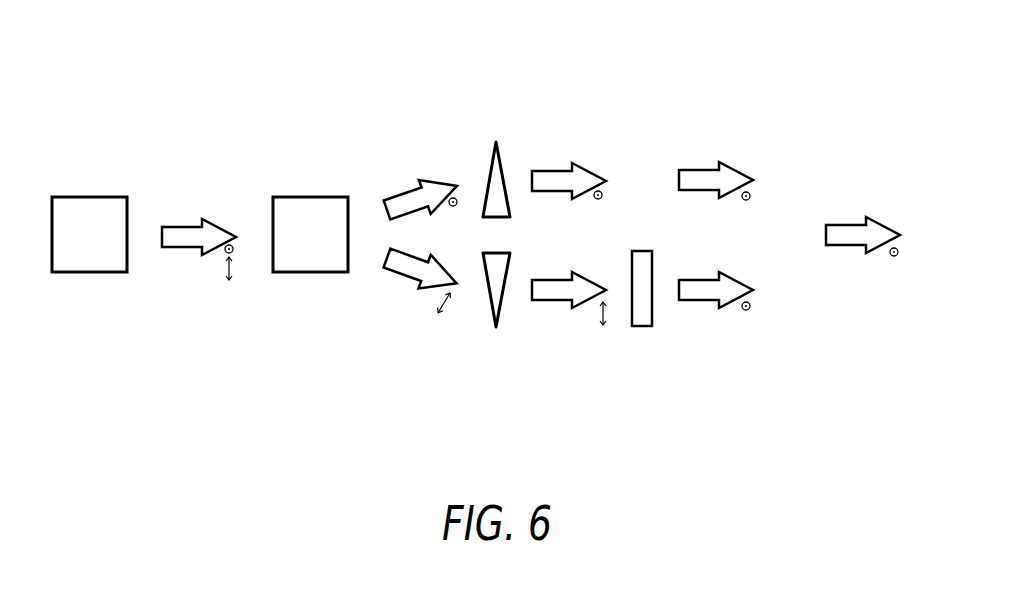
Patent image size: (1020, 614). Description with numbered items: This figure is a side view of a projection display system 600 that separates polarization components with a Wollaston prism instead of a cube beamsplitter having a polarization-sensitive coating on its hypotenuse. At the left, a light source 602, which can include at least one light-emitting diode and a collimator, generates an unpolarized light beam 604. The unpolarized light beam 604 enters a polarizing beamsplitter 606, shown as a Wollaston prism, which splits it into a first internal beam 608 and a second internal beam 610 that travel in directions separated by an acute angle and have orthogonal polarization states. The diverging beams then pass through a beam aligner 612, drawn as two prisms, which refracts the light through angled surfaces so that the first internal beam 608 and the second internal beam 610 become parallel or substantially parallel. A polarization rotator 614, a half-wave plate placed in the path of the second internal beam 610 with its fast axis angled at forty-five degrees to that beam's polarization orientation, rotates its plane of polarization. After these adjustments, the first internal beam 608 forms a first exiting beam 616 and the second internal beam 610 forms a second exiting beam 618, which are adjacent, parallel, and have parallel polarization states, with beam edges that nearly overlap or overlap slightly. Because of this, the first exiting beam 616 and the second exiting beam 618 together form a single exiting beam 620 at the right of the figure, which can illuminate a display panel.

The projection display system 600 is at (119, 78).
The light source 602 is at (90, 197).
The unpolarized light beam 604 is at (185, 222).
The polarizing beamsplitter 606 is at (310, 197).
The first internal beam 608 is at (403, 188).
The second internal beam 610 is at (403, 278).
The beam aligner 612 is at (497, 138).
The polarization rotator 614 is at (640, 328).
The first exiting beam 616 is at (699, 170).
The second exiting beam 618 is at (700, 302).
The single exiting beam 620 is at (848, 225).